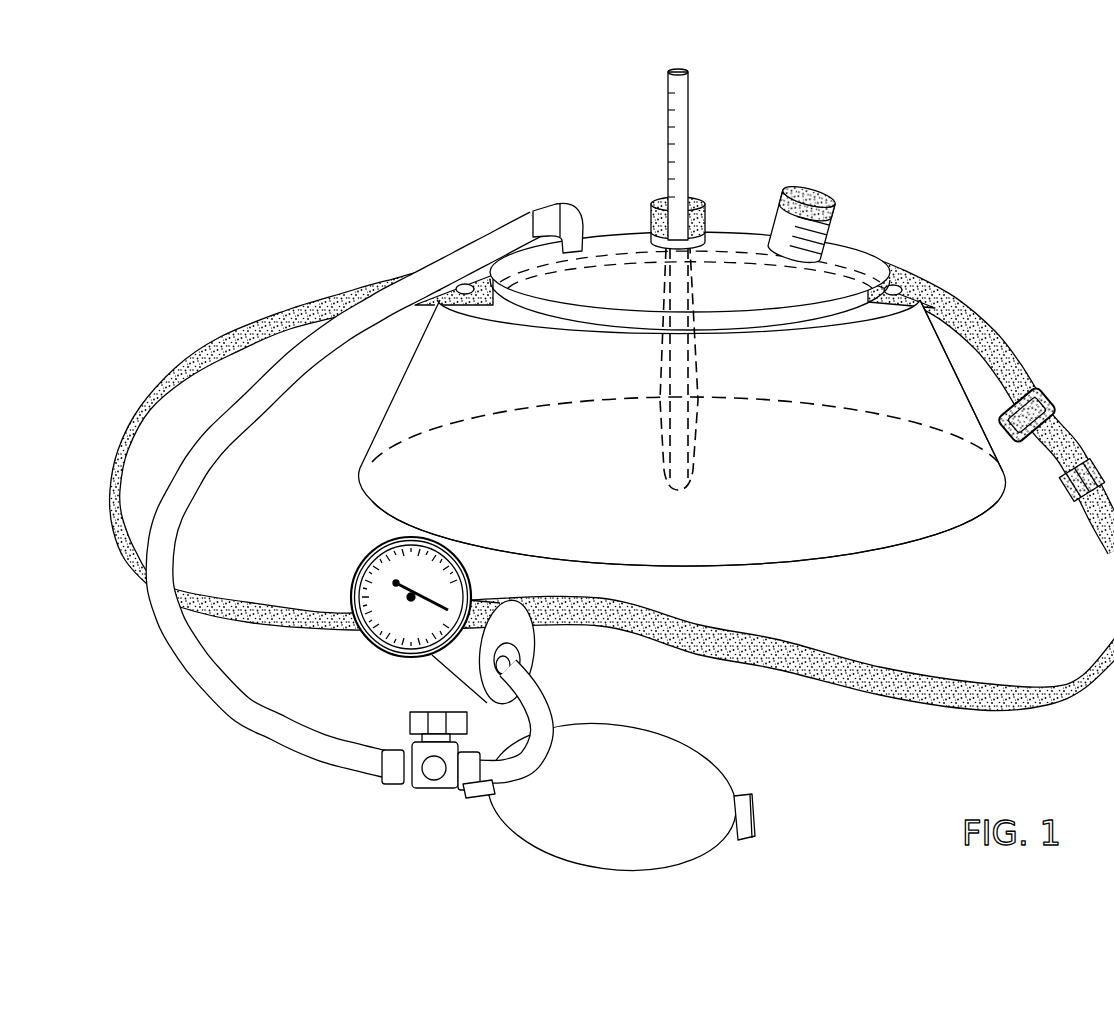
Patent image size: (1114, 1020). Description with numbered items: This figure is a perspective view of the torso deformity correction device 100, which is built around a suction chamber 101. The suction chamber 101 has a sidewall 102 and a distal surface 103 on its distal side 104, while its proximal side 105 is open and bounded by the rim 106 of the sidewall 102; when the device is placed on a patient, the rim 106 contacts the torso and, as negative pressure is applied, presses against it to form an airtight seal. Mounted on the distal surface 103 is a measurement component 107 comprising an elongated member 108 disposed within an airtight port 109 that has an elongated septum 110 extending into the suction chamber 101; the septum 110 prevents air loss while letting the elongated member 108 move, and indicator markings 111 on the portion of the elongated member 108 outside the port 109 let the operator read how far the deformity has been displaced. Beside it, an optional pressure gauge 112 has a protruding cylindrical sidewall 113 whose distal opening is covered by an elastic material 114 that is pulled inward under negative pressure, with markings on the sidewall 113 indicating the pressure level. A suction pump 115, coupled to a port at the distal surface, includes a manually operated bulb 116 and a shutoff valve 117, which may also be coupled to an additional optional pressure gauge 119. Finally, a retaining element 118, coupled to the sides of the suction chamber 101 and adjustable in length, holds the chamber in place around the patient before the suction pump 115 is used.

The correction device 100 is at (993, 118).
The suction chamber 101 is at (712, 334).
The sidewall 102 is at (937, 386).
The distal surface 103 is at (822, 288).
The distal side 104 is at (503, 115).
The proximal side 105 is at (960, 572).
The rim 106 is at (983, 518).
The measurement component 107 is at (695, 316).
The elongated member 108 is at (681, 72).
The airtight port 109 is at (707, 223).
The septum 110 is at (700, 427).
The indicator markings 111 is at (660, 197).
The pressure gauge 112 is at (827, 194).
The cylindrical sidewall 113 is at (812, 233).
The elastic material 114 is at (805, 196).
The suction pump 115 is at (189, 663).
The bulb 116 is at (640, 735).
The shutoff valve 117 is at (425, 790).
The retaining element 118 is at (195, 355).
The pressure gauge 119 is at (370, 562).